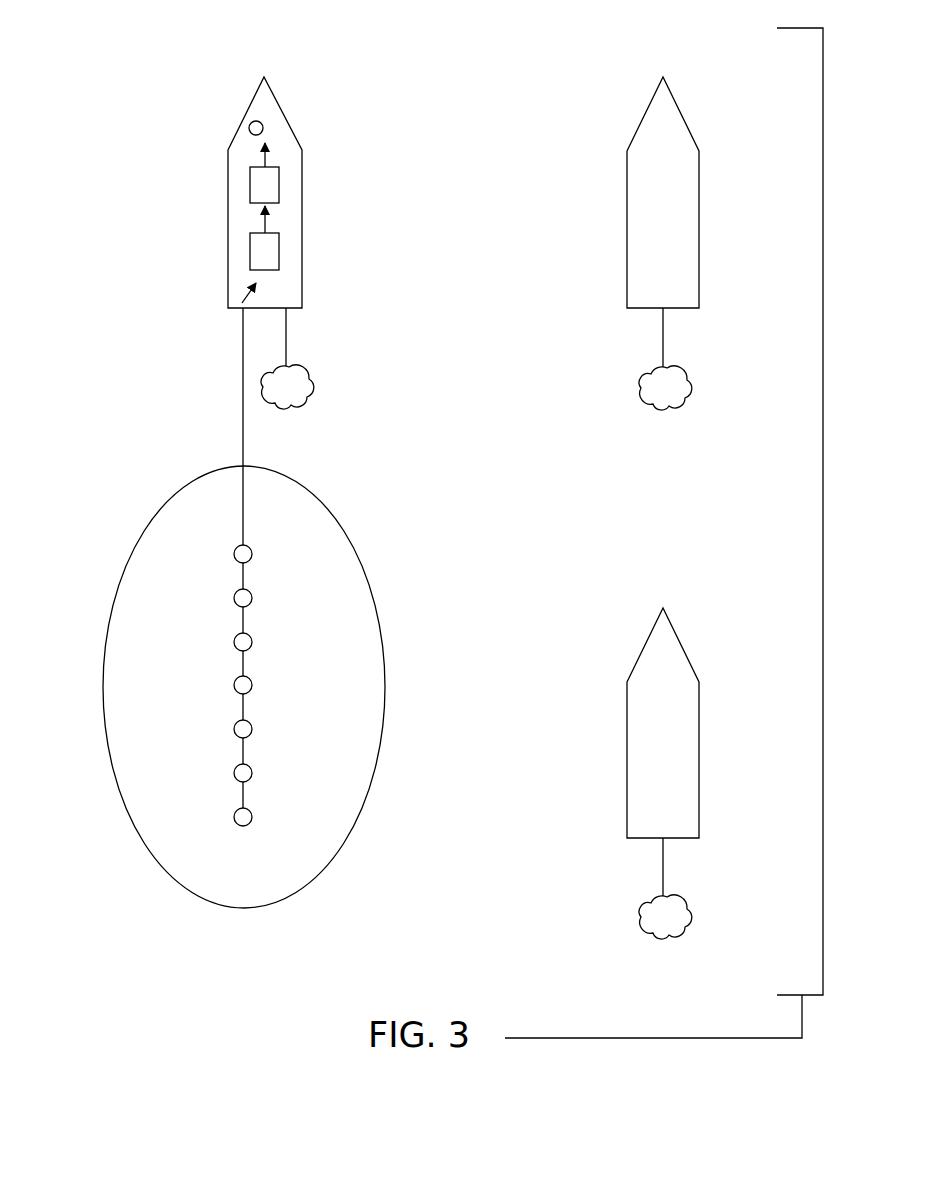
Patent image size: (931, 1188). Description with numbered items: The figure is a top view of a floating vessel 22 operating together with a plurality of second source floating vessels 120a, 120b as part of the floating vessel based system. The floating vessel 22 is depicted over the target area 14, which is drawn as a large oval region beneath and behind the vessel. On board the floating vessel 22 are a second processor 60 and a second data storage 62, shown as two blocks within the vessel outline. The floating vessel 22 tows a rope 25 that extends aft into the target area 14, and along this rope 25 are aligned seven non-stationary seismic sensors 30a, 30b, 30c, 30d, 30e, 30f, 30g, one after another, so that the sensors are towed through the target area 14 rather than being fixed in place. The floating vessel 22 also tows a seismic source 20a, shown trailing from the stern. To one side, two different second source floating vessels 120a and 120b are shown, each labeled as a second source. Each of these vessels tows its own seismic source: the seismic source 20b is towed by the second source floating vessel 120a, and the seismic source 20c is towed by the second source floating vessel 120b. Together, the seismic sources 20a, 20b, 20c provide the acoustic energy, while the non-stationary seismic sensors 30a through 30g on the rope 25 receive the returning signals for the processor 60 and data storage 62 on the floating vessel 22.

The target area 14 is at (103, 687).
The seismic source 20a is at (312, 373).
The seismic source 20b is at (689, 395).
The seismic source 20c is at (689, 925).
The floating vessel 22 is at (302, 220).
The rope 25 is at (243, 428).
The non-stationary seismic sensor 30a is at (251, 550).
The non-stationary seismic sensor 30b is at (251, 594).
The non-stationary seismic sensor 30c is at (251, 638).
The non-stationary seismic sensor 30d is at (251, 681).
The non-stationary seismic sensor 30e is at (251, 725).
The non-stationary seismic sensor 30f is at (251, 769).
The non-stationary seismic sensor 30g is at (251, 813).
The second processor 60 is at (250, 250).
The second data storage 62 is at (250, 186).
The second source floating vessel 120a is at (699, 220).
The second source floating vessel 120b is at (699, 760).